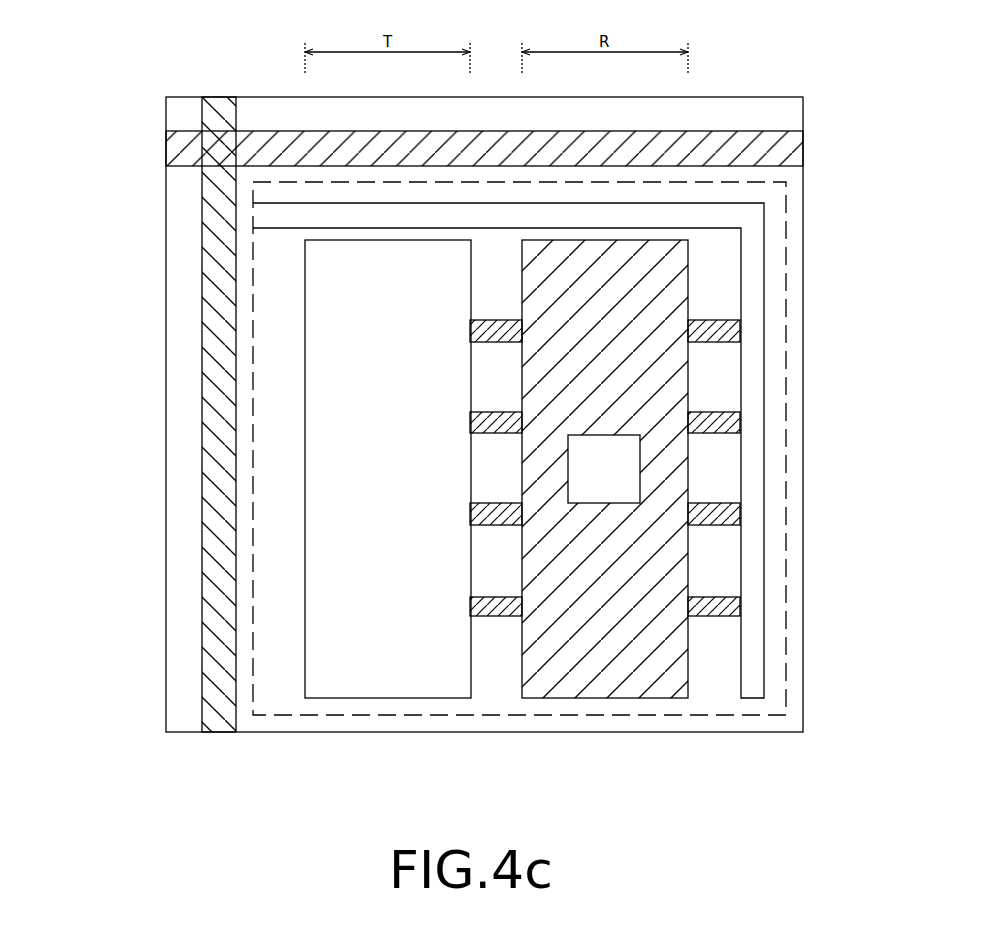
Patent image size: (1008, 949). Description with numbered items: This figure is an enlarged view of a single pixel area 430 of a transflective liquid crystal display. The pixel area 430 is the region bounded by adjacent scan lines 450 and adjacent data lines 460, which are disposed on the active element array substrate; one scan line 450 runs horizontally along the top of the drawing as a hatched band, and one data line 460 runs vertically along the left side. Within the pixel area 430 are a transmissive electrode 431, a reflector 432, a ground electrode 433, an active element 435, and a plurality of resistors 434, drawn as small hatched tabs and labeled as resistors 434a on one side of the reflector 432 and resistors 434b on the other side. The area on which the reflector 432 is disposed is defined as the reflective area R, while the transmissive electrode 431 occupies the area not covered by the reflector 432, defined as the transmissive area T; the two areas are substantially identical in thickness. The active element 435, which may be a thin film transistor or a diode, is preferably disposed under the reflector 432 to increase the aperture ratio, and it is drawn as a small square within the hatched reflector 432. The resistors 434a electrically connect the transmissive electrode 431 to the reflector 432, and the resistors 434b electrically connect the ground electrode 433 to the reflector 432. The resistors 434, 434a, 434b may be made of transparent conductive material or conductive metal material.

The pixel area 430 is at (786, 330).
The transmissive electrode 431 is at (330, 483).
The reflector 432 is at (622, 657).
The ground electrode 433 is at (752, 567).
The resistors 434 is at (712, 608).
The resistors 434a is at (490, 610).
The resistors 434b is at (707, 423).
The active element 435 is at (622, 470).
The scan lines 450 is at (750, 147).
The data lines 460 is at (227, 285).